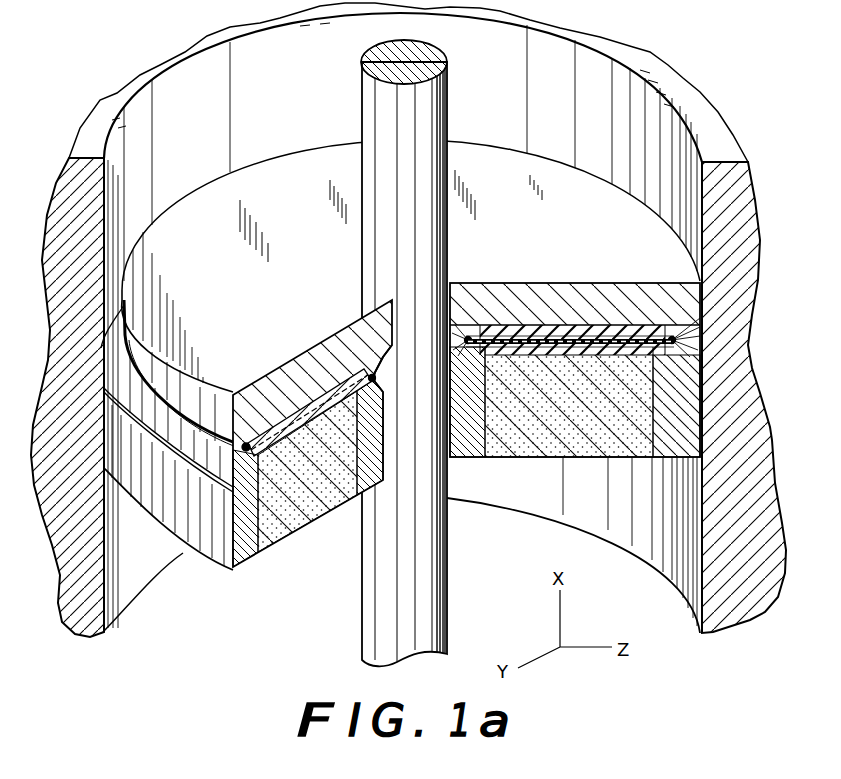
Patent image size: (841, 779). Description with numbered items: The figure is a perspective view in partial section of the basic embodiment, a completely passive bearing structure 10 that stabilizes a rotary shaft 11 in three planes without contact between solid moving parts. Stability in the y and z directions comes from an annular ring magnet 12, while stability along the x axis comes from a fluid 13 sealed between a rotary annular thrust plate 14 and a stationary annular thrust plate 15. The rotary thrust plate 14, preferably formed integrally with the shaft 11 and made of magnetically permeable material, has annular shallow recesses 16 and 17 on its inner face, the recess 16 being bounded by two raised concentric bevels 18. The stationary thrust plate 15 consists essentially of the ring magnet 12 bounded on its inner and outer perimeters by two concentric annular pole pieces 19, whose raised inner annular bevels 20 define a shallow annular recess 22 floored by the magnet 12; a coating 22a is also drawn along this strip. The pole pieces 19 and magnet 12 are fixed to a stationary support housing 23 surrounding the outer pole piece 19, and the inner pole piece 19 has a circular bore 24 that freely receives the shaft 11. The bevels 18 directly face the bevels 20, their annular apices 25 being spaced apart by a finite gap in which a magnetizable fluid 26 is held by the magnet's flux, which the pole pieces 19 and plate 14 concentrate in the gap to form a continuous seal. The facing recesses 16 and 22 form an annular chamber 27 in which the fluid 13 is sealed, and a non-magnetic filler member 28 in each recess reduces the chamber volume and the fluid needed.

The bearing structure 10 is at (650, 52).
The rotary shaft 11 is at (449, 99).
The annular ring magnet 12 is at (323, 487).
The fluid 13 is at (522, 334).
The rotary annular thrust plate 14 is at (322, 264).
The stationary annular thrust plate 15 is at (193, 557).
The annular shallow recess 16 is at (597, 331).
The annular shallow recess 17 is at (400, 368).
The raised concentric bevel 18 is at (466, 425).
The annular pole piece 19 is at (480, 420).
The raised inner annular bevel 20 is at (250, 462).
The shallow annular recess 22 is at (512, 347).
The coating 22a is at (462, 338).
The stationary support housing 23 is at (103, 113).
The circular bore 24 is at (452, 455).
The annular apice 25 is at (242, 447).
The magnetizable fluid 26 is at (372, 377).
The annular chamber 27 is at (500, 330).
The non-magnetic filler member 28 is at (320, 392).